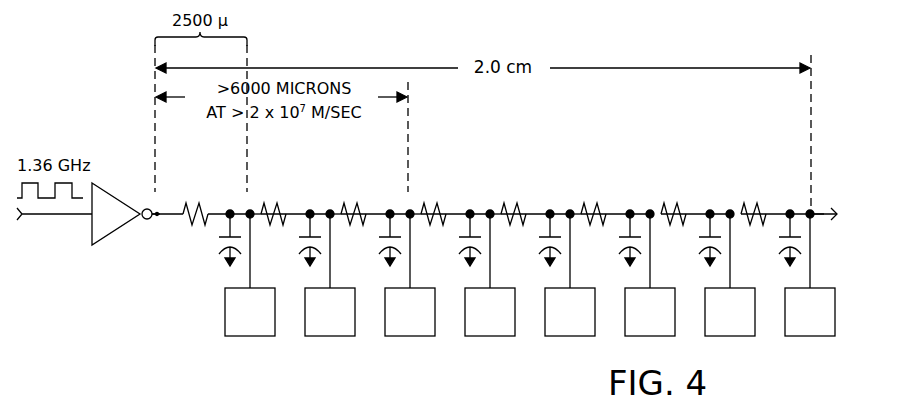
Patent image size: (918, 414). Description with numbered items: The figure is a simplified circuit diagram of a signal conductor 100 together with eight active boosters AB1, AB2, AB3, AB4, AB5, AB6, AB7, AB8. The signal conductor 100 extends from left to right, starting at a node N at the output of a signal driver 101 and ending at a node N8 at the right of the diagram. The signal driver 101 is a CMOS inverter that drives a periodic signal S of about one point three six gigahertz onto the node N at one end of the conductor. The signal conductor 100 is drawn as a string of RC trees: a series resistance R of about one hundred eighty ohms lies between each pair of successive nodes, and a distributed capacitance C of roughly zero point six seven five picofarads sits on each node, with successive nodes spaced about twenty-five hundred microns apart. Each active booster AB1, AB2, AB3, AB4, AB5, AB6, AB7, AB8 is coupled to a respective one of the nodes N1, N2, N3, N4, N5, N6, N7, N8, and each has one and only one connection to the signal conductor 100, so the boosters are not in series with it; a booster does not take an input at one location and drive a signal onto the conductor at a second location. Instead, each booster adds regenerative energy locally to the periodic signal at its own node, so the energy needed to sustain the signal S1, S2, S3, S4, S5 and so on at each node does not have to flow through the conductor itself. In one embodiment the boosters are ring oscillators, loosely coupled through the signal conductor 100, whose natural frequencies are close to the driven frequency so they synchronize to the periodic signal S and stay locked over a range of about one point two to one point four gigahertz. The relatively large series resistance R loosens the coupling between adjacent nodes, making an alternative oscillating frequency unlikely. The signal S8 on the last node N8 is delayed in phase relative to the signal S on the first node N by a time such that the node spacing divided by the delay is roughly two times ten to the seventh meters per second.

The signal conductor 100 is at (165, 212).
The signal driver 101 is at (110, 191).
The series resistance R is at (474, 200).
The distributed capacitance C is at (500, 240).
The node N is at (157, 205).
The node N1 is at (246, 206).
The node N2 is at (326, 206).
The node N3 is at (406, 206).
The node N4 is at (489, 206).
The node N5 is at (566, 206).
The node N6 is at (646, 206).
The node N7 is at (729, 206).
The node N8 is at (806, 206).
The periodic signal S is at (153, 223).
The signal S1 is at (256, 222).
The signal S2 is at (336, 222).
The signal S3 is at (416, 222).
The signal S4 is at (496, 222).
The signal S5 is at (576, 222).
The signal S8 is at (816, 222).
The active booster AB1 is at (250, 275).
The active booster AB2 is at (330, 275).
The active booster AB3 is at (410, 275).
The active booster AB4 is at (490, 275).
The active booster AB5 is at (570, 275).
The active booster AB6 is at (650, 275).
The active booster AB7 is at (730, 275).
The active booster AB8 is at (810, 275).